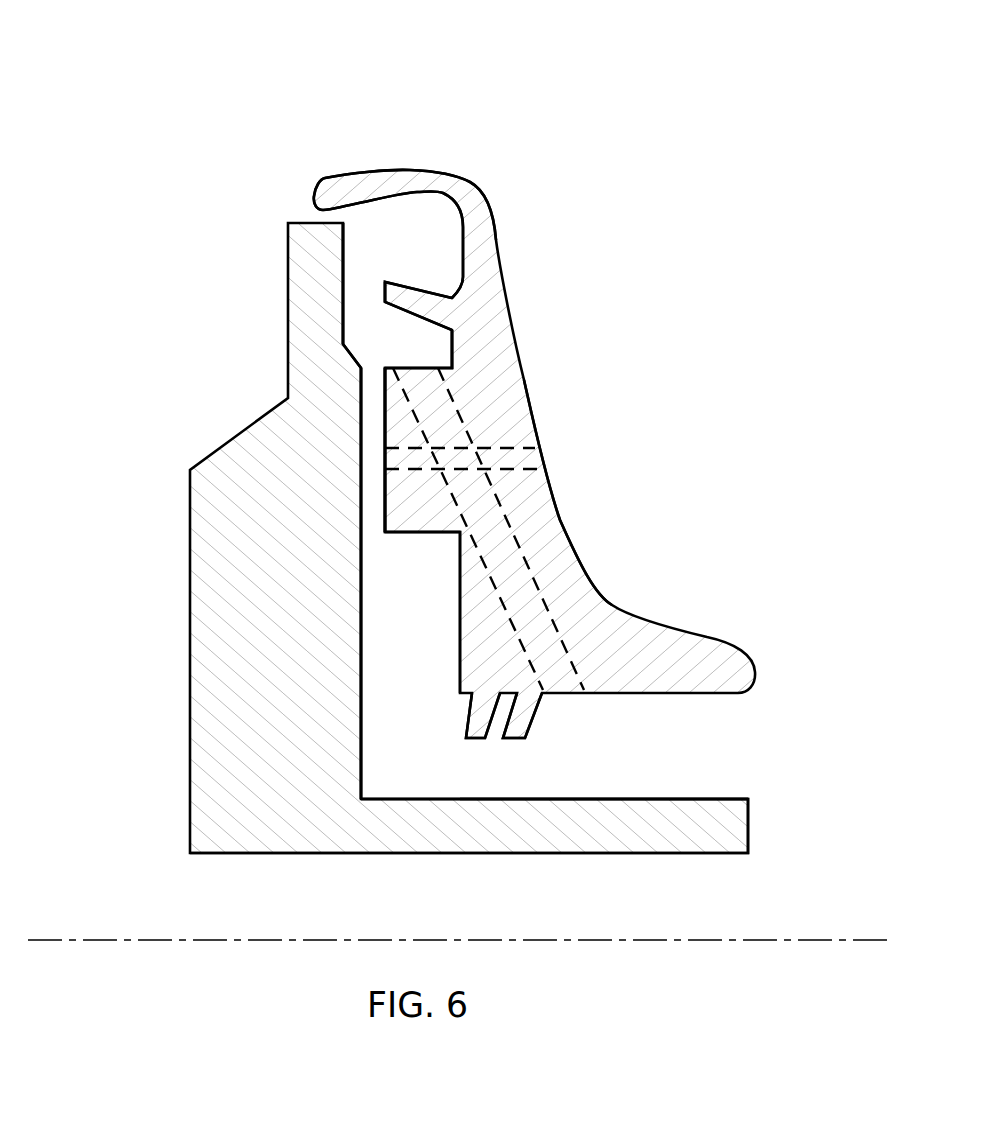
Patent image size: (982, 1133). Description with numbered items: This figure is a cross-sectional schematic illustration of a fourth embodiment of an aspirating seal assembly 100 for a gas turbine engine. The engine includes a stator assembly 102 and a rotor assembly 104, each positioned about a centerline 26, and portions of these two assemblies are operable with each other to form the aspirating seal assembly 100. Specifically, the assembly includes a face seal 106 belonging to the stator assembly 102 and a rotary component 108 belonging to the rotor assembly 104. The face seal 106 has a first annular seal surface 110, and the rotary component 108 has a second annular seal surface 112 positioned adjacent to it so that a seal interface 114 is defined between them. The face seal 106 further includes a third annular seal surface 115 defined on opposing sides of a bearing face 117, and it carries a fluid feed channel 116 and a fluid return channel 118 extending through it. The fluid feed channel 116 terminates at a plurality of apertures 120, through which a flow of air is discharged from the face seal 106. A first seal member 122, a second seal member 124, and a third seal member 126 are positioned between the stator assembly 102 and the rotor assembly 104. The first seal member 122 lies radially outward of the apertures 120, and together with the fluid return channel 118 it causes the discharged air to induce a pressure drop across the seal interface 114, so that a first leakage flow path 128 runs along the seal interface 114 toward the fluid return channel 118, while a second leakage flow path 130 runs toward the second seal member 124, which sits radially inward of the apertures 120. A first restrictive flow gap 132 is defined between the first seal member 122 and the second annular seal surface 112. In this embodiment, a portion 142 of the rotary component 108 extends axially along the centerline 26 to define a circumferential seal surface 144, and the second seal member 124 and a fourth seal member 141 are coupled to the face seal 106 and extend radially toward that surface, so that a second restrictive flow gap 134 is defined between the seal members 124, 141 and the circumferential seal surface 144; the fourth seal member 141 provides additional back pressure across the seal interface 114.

The aspirating seal assembly 100 is at (466, 57).
The stator assembly 102 is at (549, 180).
The rotor assembly 104 is at (163, 326).
The face seal 106 is at (565, 522).
The rotary component 108 is at (346, 321).
The first annular seal surface 110 is at (373, 390).
The second annular seal surface 112 is at (362, 762).
The seal interface 114 is at (346, 320).
The third annular seal surface 115 is at (445, 345).
The fluid feed channel 116 is at (513, 444).
The bearing face 117 is at (423, 533).
The fluid return channel 118 is at (557, 613).
The plurality of apertures 120 is at (388, 455).
The first seal member 122 is at (405, 285).
The second seal member 124 is at (465, 712).
The third seal member 126 is at (334, 174).
The first leakage flow path 128 is at (410, 349).
The second leakage flow path 130 is at (425, 587).
The first restrictive flow gap 132 is at (349, 278).
The second restrictive flow gap 134 is at (518, 783).
The fourth seal member 141 is at (542, 706).
The portion of rotary component 142 is at (553, 838).
The circumferential seal surface 144 is at (430, 799).
The centerline 26 is at (806, 938).